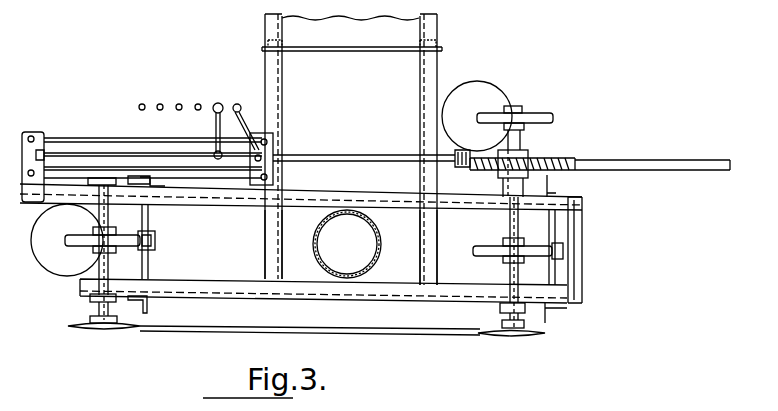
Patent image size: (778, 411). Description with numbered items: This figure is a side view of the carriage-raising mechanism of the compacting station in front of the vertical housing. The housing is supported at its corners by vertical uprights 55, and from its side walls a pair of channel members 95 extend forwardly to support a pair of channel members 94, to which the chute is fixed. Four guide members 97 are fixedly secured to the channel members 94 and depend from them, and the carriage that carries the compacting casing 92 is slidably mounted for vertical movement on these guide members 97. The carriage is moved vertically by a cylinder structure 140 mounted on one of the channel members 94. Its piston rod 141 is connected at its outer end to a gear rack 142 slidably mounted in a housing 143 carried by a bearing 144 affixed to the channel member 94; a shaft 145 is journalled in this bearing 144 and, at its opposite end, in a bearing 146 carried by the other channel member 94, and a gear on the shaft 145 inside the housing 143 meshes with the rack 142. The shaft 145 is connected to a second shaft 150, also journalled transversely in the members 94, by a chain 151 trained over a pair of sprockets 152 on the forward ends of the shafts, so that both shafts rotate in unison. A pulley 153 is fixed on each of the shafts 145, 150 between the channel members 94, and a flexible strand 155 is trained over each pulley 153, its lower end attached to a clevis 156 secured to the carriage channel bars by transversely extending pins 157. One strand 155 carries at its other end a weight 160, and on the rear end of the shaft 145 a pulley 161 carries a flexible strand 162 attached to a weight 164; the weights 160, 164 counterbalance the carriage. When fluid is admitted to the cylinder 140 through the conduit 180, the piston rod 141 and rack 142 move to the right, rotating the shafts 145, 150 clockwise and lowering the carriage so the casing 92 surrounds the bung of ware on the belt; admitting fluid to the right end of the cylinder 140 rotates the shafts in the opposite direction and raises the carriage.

The vertical upright 55 is at (274, 44).
The channel member 95 is at (273, 60).
The cylinder structure 140 is at (78, 139).
The conduit 180 is at (214, 116).
The piston rod 141 is at (318, 156).
The gear rack 142 is at (565, 162).
The housing 143 is at (525, 158).
The bearing 144 is at (498, 186).
The shaft 145 is at (516, 238).
The bearing 146 is at (498, 313).
The shaft 150 is at (92, 305).
The chain 151 is at (405, 331).
The sprocket 152 is at (103, 329).
The pulley 153 is at (118, 236).
The flexible strand 155 is at (70, 243).
The clevis 156 is at (157, 238).
The pin 157 is at (150, 262).
The weight 160 is at (67, 240).
The pulley 161 is at (517, 118).
The flexible strand 162 is at (551, 118).
The weight 164 is at (477, 116).
The compacting casing 92 is at (381, 240).
The channel member 94 is at (283, 203).
The guide member 97 is at (168, 188).